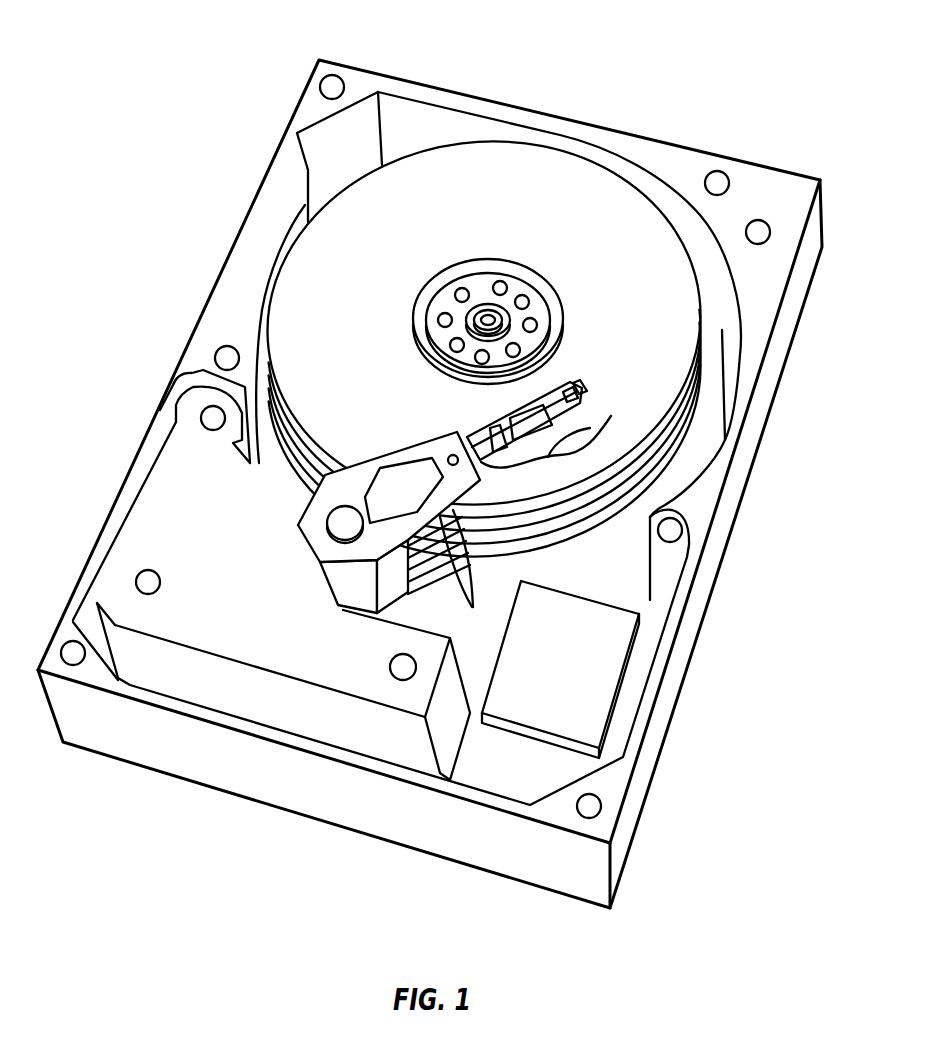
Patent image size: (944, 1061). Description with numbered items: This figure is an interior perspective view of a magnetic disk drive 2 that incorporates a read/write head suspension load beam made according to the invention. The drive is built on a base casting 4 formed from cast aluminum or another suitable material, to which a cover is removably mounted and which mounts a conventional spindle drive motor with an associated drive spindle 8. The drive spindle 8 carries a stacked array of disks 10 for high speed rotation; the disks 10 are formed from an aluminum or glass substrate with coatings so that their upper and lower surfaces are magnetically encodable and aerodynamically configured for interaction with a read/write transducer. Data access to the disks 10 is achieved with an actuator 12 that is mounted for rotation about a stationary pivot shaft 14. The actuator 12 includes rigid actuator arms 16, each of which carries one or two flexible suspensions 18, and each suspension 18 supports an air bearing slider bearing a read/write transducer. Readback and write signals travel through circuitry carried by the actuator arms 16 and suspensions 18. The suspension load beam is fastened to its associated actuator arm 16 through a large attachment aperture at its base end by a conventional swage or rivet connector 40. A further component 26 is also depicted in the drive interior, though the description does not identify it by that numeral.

The disk drive 2 is at (704, 90).
The base casting 4 is at (800, 307).
The drive spindle 8 is at (488, 320).
The disks 10 is at (334, 213).
The actuator 12 is at (345, 590).
The stationary pivot shaft 14 is at (342, 523).
The actuator arms 16 is at (472, 607).
The suspensions 18 is at (553, 457).
The circuit component block 26 is at (595, 674).
The swage or rivet connector 40 is at (453, 455).